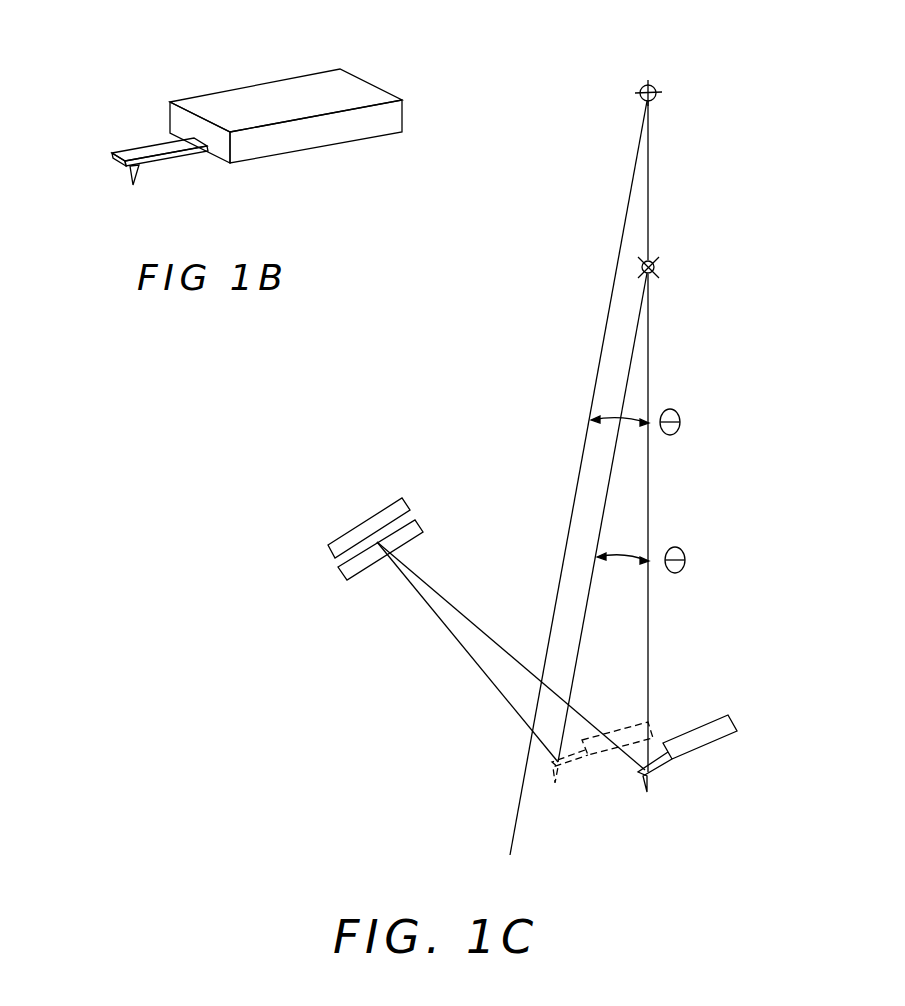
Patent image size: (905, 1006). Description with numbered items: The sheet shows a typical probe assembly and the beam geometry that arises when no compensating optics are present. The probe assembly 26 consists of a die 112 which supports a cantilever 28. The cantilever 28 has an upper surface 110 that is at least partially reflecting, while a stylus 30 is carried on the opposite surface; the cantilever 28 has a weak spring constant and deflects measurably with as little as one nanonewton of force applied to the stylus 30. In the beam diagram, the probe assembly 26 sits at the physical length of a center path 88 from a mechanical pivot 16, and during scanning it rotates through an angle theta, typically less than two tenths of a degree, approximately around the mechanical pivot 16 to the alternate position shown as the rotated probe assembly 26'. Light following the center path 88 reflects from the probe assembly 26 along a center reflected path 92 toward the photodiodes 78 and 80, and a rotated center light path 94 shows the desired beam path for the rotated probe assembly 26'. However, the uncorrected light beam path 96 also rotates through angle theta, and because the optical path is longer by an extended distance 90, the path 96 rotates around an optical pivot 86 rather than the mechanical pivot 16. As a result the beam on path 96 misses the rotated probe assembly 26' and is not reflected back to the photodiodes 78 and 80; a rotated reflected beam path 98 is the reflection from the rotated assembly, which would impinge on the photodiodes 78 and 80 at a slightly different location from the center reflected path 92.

In FIG. 1B, the probe assembly 26 is at (242, 119).
In FIG. 1C, the probe assembly 26 is at (741, 753).
In FIG. 1C, the rotated probe assembly 26' is at (616, 783).
In FIG. 1B, the cantilever 28 is at (112, 155).
In FIG. 1B, the stylus 30 is at (138, 170).
In FIG. 1B, the upper surface 110 is at (143, 147).
In FIG. 1B, the die 112 is at (317, 93).
In FIG. 1C, the optical pivot 86 is at (662, 92).
In FIG. 1C, the extended distance 90 is at (648, 180).
In FIG. 1C, the mechanical pivot 16 is at (655, 267).
In FIG. 1C, the center path 88 is at (648, 505).
In FIG. 1C, the uncorrected light beam path 96 is at (585, 442).
In FIG. 1C, the rotated center light path 94 is at (582, 643).
In FIG. 1C, the center reflected path 92 is at (432, 588).
In FIG. 1C, the rotated reflected beam path 98 is at (478, 668).
In FIG. 1C, the photodiode 78 is at (330, 552).
In FIG. 1C, the photodiode 80 is at (347, 573).